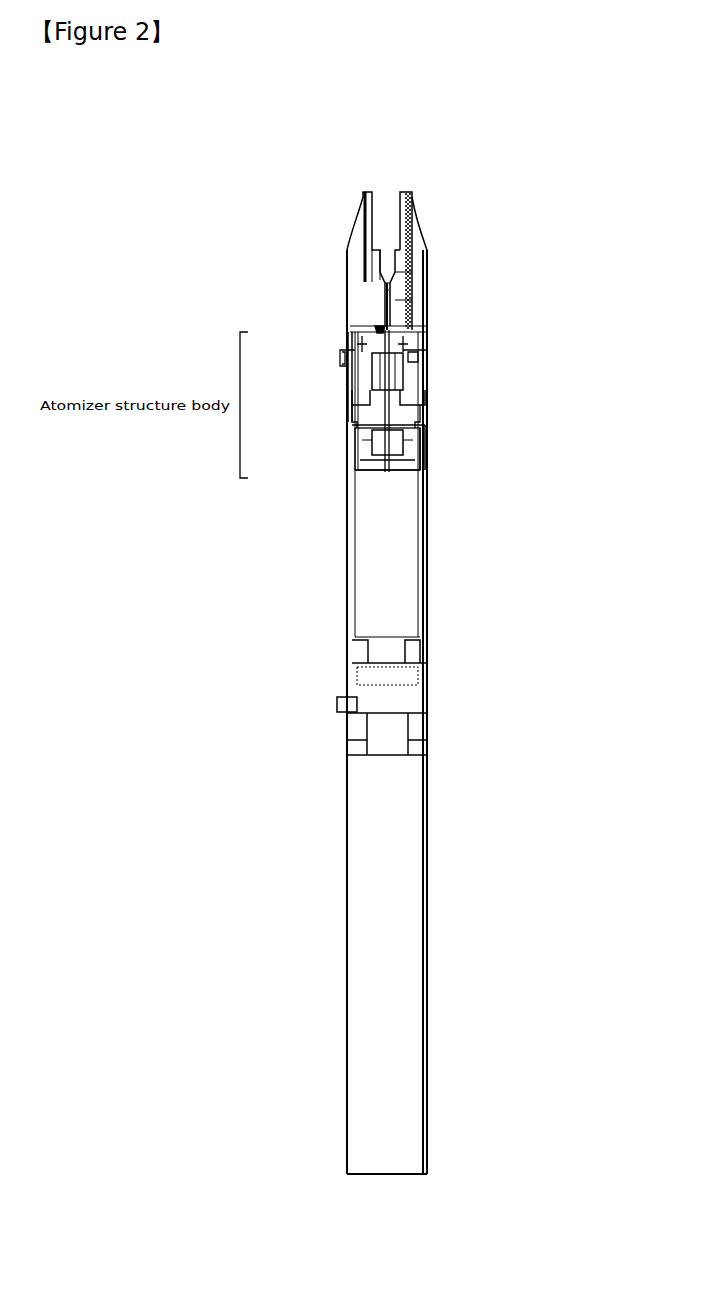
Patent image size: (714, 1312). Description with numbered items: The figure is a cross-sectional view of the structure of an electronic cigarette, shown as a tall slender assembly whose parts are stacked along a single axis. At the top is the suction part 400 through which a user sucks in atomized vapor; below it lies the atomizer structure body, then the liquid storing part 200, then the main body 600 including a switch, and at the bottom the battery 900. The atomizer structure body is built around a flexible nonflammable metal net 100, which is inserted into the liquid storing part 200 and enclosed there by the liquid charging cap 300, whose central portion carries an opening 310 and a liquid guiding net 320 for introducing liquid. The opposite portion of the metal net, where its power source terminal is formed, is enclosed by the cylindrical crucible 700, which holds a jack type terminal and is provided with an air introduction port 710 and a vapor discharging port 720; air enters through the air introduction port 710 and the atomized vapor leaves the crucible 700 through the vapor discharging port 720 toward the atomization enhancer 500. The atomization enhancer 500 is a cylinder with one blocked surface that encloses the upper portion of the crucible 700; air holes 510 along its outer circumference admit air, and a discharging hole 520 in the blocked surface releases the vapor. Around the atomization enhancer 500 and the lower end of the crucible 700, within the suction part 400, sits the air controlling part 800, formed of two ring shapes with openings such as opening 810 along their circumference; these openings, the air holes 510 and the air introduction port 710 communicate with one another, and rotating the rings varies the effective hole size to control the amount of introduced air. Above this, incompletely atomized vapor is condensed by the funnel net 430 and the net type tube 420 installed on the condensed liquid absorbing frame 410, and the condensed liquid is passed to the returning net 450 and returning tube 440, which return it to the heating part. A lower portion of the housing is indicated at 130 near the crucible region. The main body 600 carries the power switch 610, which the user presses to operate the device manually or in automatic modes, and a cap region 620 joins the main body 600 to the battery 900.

The flexible nonflammable metal net 100 is at (430, 395).
The housing lower portion 130 is at (432, 445).
The liquid storing part 200 is at (366, 575).
The liquid charging cap 300 is at (432, 470).
The opening 310 is at (388, 474).
The liquid guiding net 320 is at (358, 455).
The suction part 400 is at (348, 232).
The condensed liquid absorbing frame 410 is at (405, 190).
The net type tube 420 is at (428, 248).
The funnel net 430 is at (429, 272).
The returning tube 440 is at (430, 300).
The returning net 450 is at (430, 325).
The atomization enhancer 500 is at (432, 341).
The air holes 510 is at (432, 352).
The discharging hole 520 is at (430, 331).
The main body 600 is at (352, 680).
The power switch 610 is at (336, 706).
The battery cap 620 is at (347, 745).
The crucible 700 is at (352, 412).
The air introduction port 710 is at (352, 445).
The vapor discharging port 720 is at (340, 356).
The air controlling part 800 is at (348, 385).
The opening 810 is at (348, 358).
The battery 900 is at (365, 912).